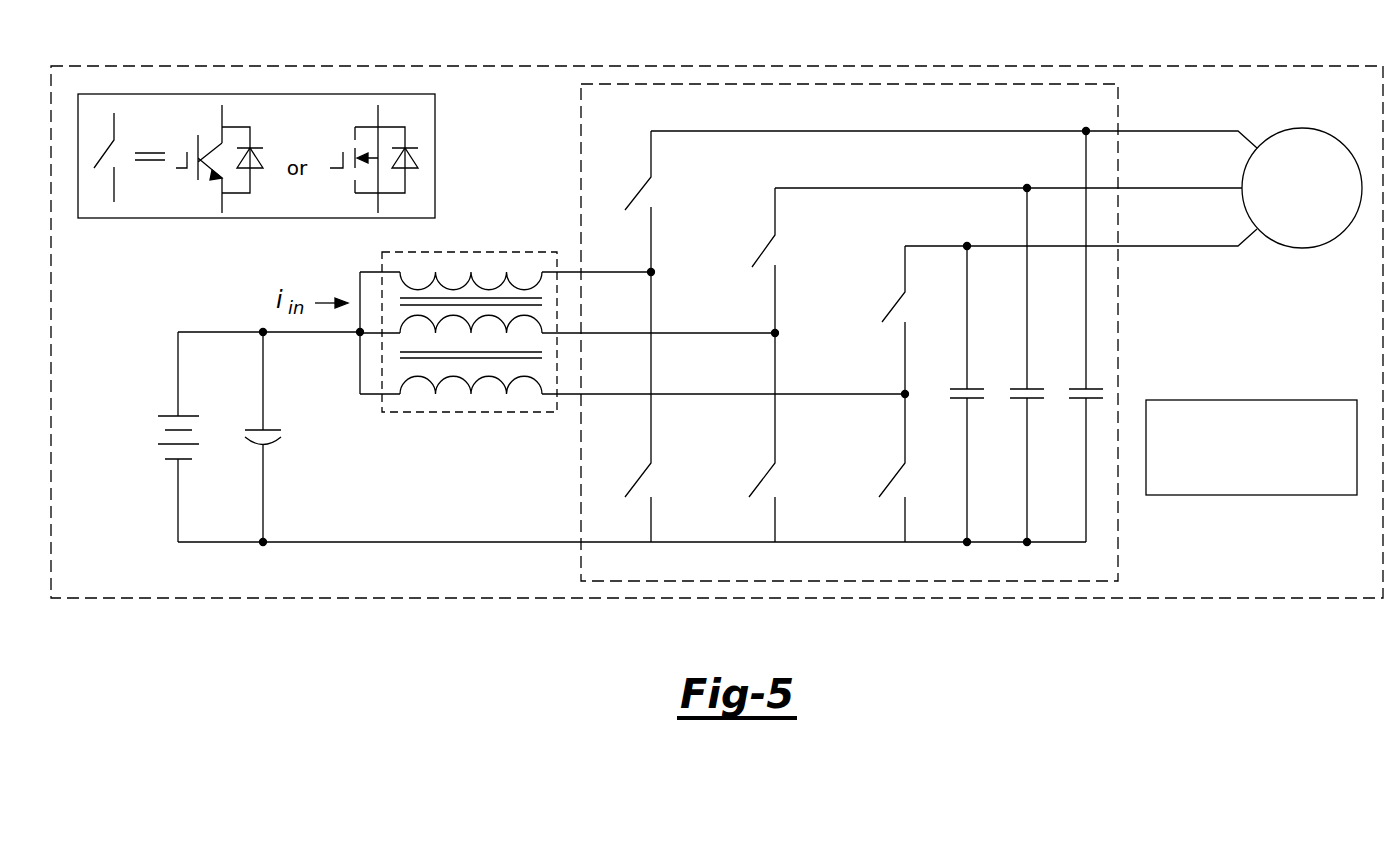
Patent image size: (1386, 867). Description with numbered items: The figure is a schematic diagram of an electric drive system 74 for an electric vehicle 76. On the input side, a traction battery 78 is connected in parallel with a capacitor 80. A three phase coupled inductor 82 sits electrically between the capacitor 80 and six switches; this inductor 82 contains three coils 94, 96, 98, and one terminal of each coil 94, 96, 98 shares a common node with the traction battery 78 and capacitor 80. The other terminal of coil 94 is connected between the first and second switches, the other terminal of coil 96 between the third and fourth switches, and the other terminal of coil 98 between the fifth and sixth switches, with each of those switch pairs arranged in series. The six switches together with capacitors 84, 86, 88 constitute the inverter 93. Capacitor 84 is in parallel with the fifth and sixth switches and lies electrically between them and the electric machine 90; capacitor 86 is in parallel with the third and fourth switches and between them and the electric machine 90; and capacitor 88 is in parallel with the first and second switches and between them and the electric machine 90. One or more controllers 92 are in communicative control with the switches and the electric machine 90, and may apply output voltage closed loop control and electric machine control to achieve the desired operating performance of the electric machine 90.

The electric drive system 74 is at (1178, 268).
The electric vehicle 76 is at (1300, 66).
The traction battery 78 is at (183, 416).
The capacitor 80 is at (267, 430).
The three phase coupled inductor 82 is at (380, 262).
The capacitor 84 is at (972, 388).
The capacitor 86 is at (1032, 388).
The capacitor 88 is at (1091, 388).
The electric machine 90 is at (1300, 128).
The controllers 92 is at (1282, 400).
The inverter 93 is at (1120, 102).
The coil 94 is at (542, 282).
The coil 96 is at (535, 318).
The coil 98 is at (535, 378).